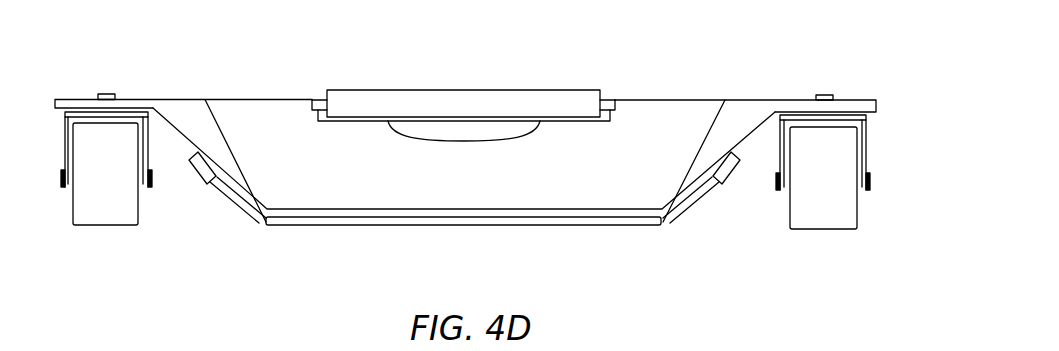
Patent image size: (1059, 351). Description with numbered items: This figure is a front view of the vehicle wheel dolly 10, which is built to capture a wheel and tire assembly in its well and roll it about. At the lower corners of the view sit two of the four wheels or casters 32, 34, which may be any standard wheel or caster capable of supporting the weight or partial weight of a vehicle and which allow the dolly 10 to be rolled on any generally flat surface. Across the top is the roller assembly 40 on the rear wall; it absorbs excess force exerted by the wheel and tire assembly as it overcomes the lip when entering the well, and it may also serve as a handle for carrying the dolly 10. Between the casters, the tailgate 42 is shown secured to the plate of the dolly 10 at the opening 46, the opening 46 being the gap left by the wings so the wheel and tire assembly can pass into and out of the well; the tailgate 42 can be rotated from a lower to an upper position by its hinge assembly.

The dolly 10 is at (648, 58).
The wheel or caster 32 is at (824, 198).
The wheel or caster 34 is at (108, 187).
The roller assembly 40 is at (515, 103).
The tailgate 42 is at (397, 222).
The opening 46 is at (607, 176).